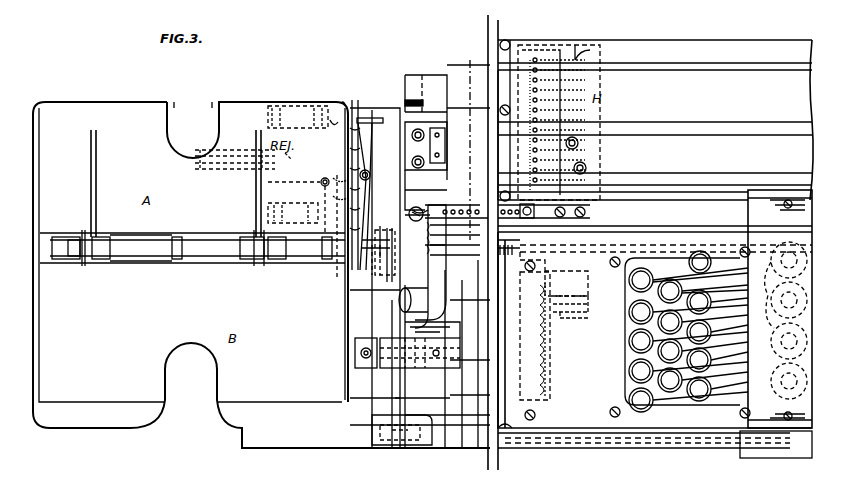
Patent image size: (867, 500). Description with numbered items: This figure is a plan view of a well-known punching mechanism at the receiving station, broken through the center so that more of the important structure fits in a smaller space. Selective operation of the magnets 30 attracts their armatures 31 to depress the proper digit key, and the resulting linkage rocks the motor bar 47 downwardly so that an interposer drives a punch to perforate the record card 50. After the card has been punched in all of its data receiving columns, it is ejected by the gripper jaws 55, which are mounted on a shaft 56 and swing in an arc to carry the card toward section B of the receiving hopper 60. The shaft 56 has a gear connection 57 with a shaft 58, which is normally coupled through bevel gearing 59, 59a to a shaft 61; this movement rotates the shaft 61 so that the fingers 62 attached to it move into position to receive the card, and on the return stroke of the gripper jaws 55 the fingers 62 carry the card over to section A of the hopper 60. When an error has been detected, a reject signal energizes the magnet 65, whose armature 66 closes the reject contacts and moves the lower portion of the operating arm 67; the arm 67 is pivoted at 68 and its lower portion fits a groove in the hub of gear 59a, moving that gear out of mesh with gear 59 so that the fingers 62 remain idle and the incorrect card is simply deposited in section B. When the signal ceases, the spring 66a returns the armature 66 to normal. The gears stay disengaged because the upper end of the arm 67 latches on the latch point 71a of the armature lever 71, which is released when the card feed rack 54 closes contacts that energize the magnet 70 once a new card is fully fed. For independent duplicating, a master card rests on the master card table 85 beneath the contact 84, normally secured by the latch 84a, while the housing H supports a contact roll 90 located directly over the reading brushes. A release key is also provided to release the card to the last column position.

The magnet 30 is at (773, 283).
The armature 31 is at (725, 258).
The motor bar 47 is at (530, 348).
The record card 50 is at (478, 395).
The card feed rack 54 is at (605, 442).
The gripper jaws 55 is at (425, 365).
The shaft 56 is at (430, 398).
The gear connection 57 is at (380, 445).
The shaft 58 is at (396, 268).
The bevel gear 59 is at (388, 230).
The bevel gear 59a is at (378, 224).
The receiving hopper 60 is at (113, 383).
The shaft 61 is at (300, 264).
The fingers 62 is at (93, 163).
The magnet 65 is at (308, 170).
The armature 66 is at (325, 178).
The spring 66a is at (340, 270).
The operating arm 67 is at (370, 200).
The pivot 68 is at (368, 166).
The magnet 70 is at (305, 106).
The armature lever 71 is at (355, 100).
The latch point 71a is at (368, 118).
The contact 84 is at (437, 75).
The latch 84a is at (412, 98).
The master card table 85 is at (662, 90).
The contact roll 90 is at (555, 52).